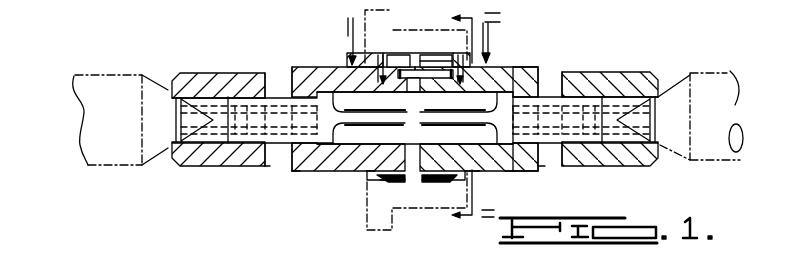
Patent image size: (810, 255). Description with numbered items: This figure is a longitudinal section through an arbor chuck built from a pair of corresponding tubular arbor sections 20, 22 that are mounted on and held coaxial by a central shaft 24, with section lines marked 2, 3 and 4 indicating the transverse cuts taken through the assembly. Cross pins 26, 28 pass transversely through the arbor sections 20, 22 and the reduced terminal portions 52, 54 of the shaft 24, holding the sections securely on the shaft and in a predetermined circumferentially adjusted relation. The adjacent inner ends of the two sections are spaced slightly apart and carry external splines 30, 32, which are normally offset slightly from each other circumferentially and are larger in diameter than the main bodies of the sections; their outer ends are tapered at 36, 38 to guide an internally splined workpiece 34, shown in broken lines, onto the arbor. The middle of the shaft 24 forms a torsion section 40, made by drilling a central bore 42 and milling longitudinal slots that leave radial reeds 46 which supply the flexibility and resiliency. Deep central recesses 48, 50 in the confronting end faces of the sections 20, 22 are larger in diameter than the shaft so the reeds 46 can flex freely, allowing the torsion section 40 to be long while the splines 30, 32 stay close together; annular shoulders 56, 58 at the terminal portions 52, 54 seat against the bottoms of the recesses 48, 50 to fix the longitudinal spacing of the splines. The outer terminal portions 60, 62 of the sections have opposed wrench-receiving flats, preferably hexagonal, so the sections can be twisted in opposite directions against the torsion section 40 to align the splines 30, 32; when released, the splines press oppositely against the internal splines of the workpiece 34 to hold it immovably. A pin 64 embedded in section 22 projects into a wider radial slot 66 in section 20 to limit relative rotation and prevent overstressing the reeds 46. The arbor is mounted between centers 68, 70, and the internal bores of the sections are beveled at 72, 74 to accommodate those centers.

The tubular arbor section 20 is at (290, 70).
The tubular arbor section 22 is at (520, 170).
The central shaft 24 is at (528, 82).
The cross pin 26 is at (300, 82).
The cross pin 28 is at (563, 72).
The external spline 30 is at (385, 181).
The external spline 32 is at (432, 179).
The internally splined workpiece 34 is at (408, 46).
The tapered spline end 36 is at (368, 173).
The tapered spline end 38 is at (462, 181).
The torsion section 40 is at (357, 146).
The central bore 42 is at (433, 126).
The radial reed 46 is at (404, 118).
The central recess 48 is at (315, 170).
The central recess 50 is at (485, 170).
The shaft terminal portion 52 is at (235, 144).
The shaft terminal portion 54 is at (590, 97).
The annular shoulder 56 is at (279, 166).
The annular shoulder 58 is at (538, 167).
The terminal portion of arbor section 60 is at (210, 77).
The terminal portion of arbor section 62 is at (652, 72).
The pin 64 is at (430, 93).
The radial slot 66 is at (393, 93).
The center 68 is at (117, 50).
The center 70 is at (723, 80).
The beveled bore 72 is at (172, 105).
The beveled bore 74 is at (660, 104).
The section line 2- 2 is at (415, 76).
The section line 3- 3 is at (476, 118).
The section line 4- 4 is at (347, 47).